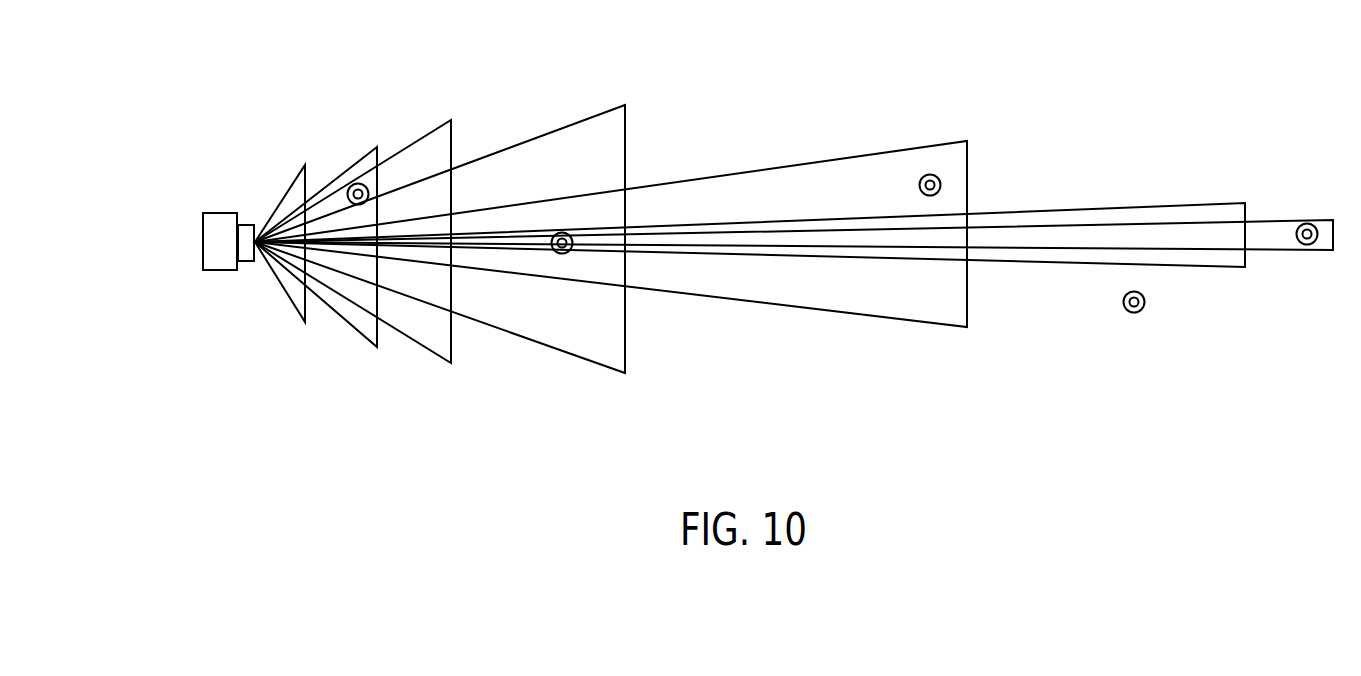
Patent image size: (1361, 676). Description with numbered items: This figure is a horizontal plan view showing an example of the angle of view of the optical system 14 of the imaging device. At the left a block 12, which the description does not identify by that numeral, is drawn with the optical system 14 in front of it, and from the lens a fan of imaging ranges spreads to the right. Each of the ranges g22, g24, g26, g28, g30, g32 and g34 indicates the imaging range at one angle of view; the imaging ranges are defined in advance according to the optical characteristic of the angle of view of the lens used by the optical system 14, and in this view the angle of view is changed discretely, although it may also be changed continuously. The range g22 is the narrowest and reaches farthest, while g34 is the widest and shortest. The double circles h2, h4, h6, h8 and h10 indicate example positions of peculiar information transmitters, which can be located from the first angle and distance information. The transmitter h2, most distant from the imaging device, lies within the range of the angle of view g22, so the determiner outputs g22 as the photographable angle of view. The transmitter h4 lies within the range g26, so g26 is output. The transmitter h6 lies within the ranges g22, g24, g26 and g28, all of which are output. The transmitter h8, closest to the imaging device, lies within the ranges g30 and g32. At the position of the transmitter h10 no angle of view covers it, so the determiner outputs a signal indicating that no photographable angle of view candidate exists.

The camera 12 is at (203, 234).
The optical system 14 is at (219, 272).
The angle of view g22 is at (1280, 218).
The angle of view g24 is at (1115, 205).
The angle of view g26 is at (818, 160).
The angle of view g28 is at (562, 130).
The angle of view g30 is at (448, 120).
The angle of view g32 is at (350, 168).
The angle of view g34 is at (290, 185).
The peculiar information transmitter h2 is at (1307, 247).
The peculiar information transmitter h4 is at (930, 173).
The peculiar information transmitter h6 is at (570, 232).
The peculiar information transmitter h8 is at (365, 187).
The peculiar information transmitter h10 is at (1134, 315).